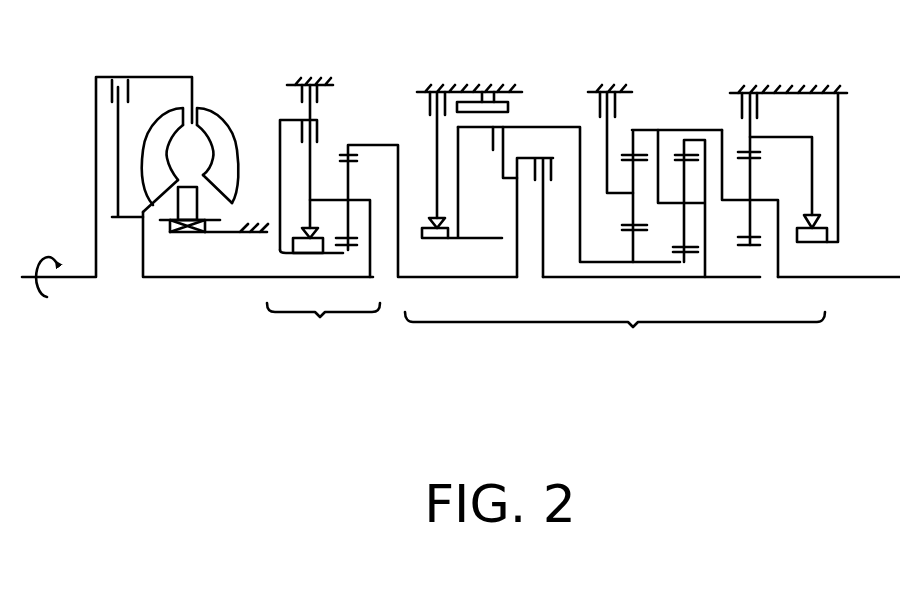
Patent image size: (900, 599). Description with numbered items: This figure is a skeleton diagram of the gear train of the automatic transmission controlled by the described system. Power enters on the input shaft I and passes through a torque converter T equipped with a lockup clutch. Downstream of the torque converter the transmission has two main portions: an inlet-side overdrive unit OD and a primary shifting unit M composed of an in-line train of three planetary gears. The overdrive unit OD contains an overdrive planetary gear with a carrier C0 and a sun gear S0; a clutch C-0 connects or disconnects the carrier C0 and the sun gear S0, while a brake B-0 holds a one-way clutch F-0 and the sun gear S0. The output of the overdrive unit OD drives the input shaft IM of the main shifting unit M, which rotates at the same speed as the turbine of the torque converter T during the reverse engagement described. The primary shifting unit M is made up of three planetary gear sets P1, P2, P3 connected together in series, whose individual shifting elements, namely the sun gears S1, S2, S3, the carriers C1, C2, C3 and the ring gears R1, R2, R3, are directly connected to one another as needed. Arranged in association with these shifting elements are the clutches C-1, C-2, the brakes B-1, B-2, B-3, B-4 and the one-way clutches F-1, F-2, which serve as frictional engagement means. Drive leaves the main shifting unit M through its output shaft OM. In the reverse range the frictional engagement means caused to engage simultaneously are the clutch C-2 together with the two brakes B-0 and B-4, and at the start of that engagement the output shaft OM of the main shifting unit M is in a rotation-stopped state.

The input shaft I is at (178, 277).
The torque converter T is at (205, 100).
The brake B-0 is at (310, 85).
The clutch C-0 is at (317, 123).
The one-way clutch F-0 is at (293, 250).
The carrier C0 is at (355, 198).
The sun gear S0 is at (350, 247).
The overdrive unit OD is at (323, 325).
The brake B-2 is at (437, 92).
The brake B-1 is at (488, 92).
The one-way clutch F-1 is at (425, 240).
The clutch C-2 is at (505, 127).
The clutch C-1 is at (534, 202).
The input shaft of the main shifting unit IM is at (593, 293).
The brake B-3 is at (607, 92).
The ring gear R1 is at (620, 150).
The carrier C1 is at (630, 200).
The sun gear S1 is at (622, 230).
The ring gear R2 is at (668, 150).
The sun gear S2 is at (667, 248).
The carrier C2 is at (745, 203).
The ring gear R3 is at (760, 157).
The sun gear S3 is at (738, 243).
The carrier C3 is at (757, 203).
The brake B-4 is at (748, 93).
The one-way clutch F-2 is at (815, 243).
The planetary gear P1 is at (633, 267).
The planetary gear P2 is at (686, 265).
The planetary gear P3 is at (755, 253).
The output shaft of the main shifting unit OM is at (880, 277).
The primary shifting unit M is at (615, 337).